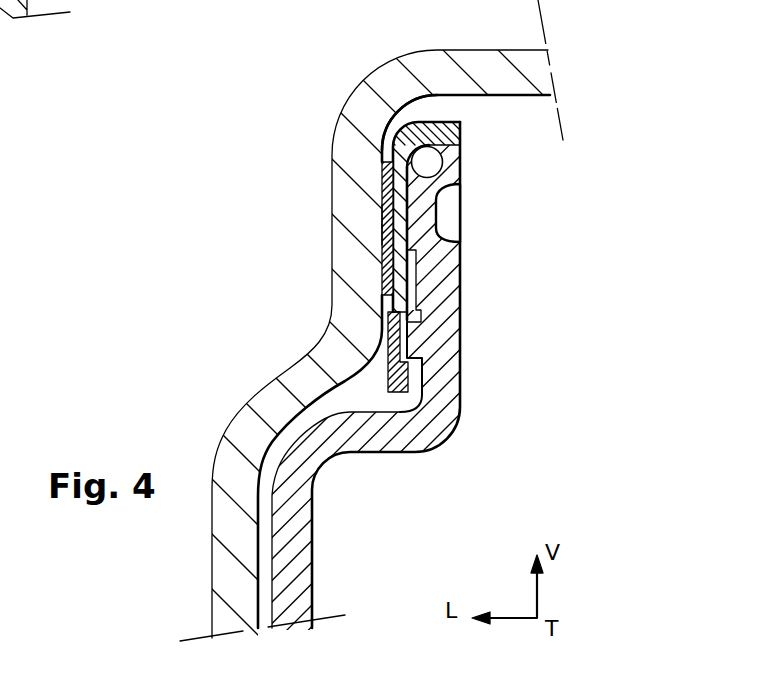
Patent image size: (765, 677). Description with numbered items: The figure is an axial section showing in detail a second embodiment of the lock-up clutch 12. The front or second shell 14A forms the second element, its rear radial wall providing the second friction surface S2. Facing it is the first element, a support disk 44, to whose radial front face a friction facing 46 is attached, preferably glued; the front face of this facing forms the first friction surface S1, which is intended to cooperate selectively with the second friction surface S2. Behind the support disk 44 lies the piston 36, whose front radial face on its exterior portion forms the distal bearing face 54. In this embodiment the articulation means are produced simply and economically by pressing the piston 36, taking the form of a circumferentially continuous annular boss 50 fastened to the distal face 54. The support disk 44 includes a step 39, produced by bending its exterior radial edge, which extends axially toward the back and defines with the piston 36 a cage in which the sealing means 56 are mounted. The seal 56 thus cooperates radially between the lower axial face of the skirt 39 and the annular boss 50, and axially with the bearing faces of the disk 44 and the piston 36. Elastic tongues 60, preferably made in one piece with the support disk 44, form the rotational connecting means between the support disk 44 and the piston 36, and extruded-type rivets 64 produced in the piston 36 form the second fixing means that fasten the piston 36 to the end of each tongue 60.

The lock-up clutch 12 is at (538, 206).
The front shell 14A is at (349, 304).
The piston 36 is at (419, 421).
The step 39 is at (432, 137).
The support disk 44 is at (382, 180).
The friction facing 46 is at (383, 140).
The annular boss 50 is at (430, 209).
The distal bearing face 54 is at (413, 287).
The sealing means 56 is at (430, 166).
The elastic tongues 60 is at (373, 390).
The rivets 64 is at (397, 333).
The first friction surface S1 is at (382, 217).
The second friction surface S2 is at (382, 235).